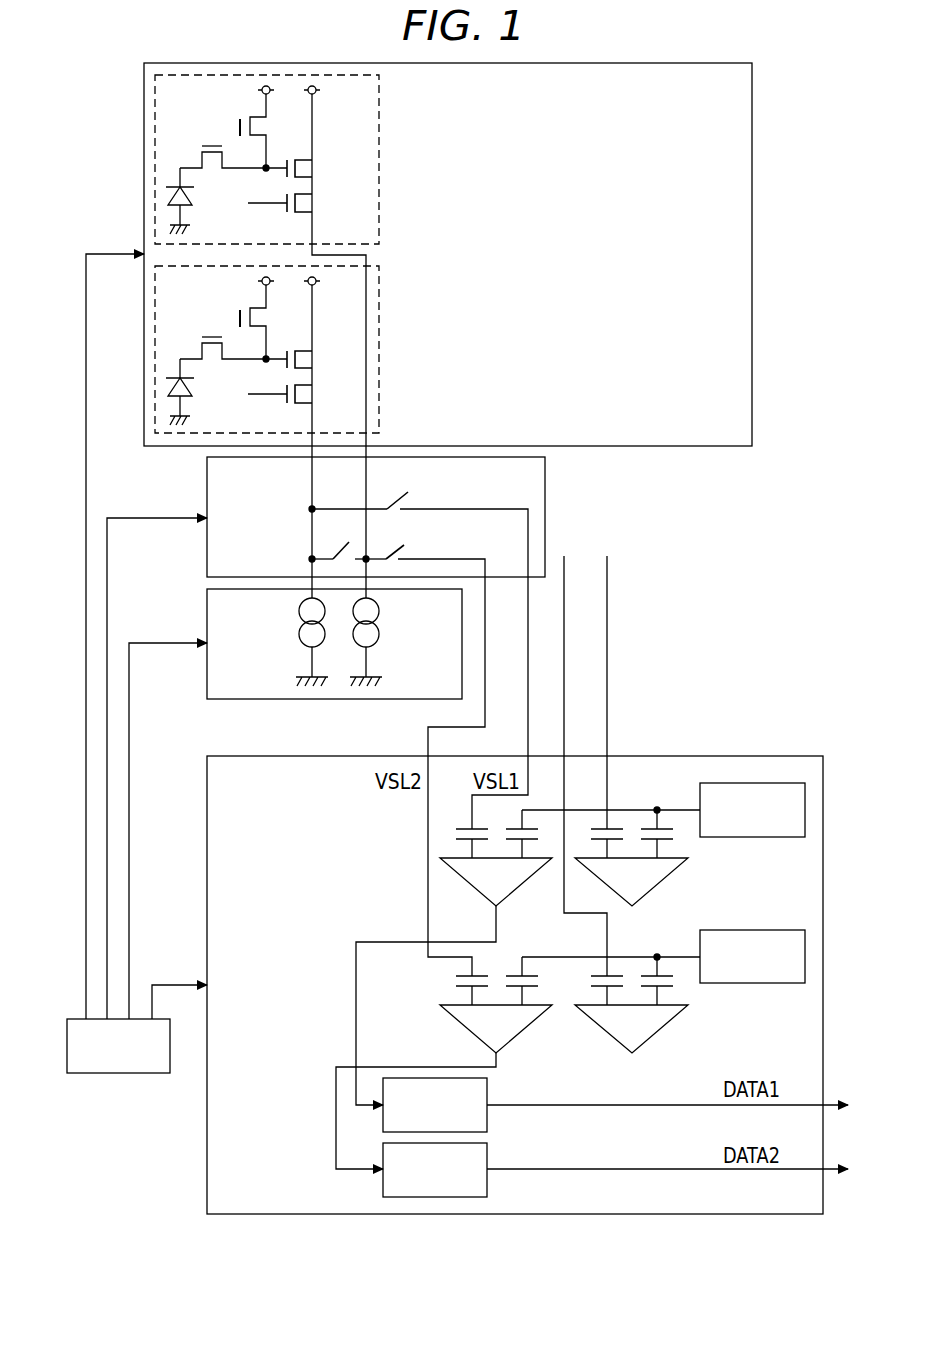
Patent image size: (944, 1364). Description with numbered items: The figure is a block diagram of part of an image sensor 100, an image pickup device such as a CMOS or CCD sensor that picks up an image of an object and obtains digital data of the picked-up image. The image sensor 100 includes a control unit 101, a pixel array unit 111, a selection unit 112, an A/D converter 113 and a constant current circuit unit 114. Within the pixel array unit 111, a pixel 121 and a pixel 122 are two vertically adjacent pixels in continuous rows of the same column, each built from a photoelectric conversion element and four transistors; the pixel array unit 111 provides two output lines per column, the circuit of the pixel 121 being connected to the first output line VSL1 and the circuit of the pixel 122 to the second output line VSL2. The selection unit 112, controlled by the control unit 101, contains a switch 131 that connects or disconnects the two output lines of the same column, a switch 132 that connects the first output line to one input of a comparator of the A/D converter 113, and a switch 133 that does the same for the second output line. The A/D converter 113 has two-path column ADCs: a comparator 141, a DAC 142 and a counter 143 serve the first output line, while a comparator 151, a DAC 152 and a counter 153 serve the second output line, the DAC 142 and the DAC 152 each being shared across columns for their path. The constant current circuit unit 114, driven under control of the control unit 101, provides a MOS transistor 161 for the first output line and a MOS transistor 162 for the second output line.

The image sensor 100 is at (149, 1210).
The control unit 101 is at (118, 1073).
The pixel array unit 111 is at (752, 257).
The selection unit 112 is at (545, 470).
The A/D converter (ADC) 113 is at (480, 1214).
The constant current circuit unit 114 is at (207, 679).
The pixel 121 is at (380, 350).
The pixel 122 is at (380, 159).
The selection switch 131 is at (344, 540).
The switch 132 is at (403, 501).
The switch 133 is at (403, 552).
The comparator 141 is at (524, 882).
The DAC 142 is at (752, 838).
The counter 143 is at (487, 1115).
The comparator 151 is at (524, 1029).
The DAC 152 is at (752, 984).
The counter 153 is at (487, 1180).
The MOS transistor 161 is at (302, 646).
The MOS transistor 162 is at (377, 646).